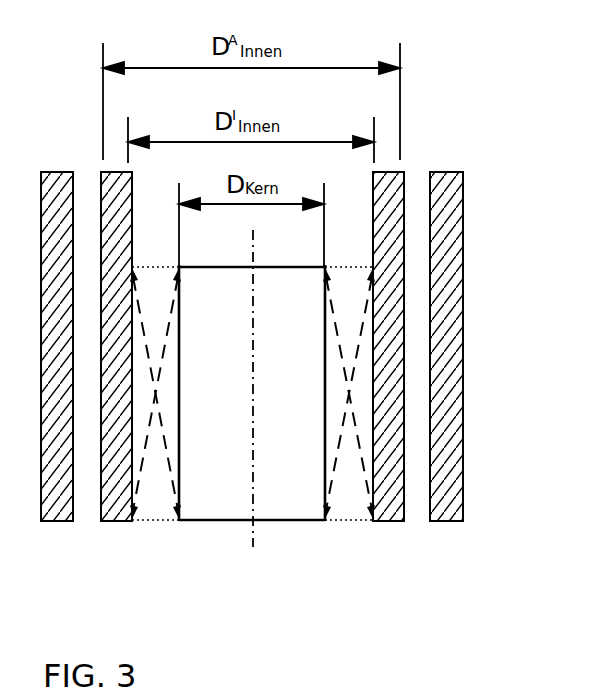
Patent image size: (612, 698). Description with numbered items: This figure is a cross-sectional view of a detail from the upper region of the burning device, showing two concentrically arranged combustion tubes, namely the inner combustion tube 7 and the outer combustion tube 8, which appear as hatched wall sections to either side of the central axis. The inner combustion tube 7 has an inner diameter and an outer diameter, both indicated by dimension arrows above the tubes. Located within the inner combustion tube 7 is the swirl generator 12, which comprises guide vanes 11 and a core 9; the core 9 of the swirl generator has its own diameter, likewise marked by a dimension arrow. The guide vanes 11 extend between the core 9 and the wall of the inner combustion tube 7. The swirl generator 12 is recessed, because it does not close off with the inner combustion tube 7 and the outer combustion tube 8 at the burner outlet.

The inner combustion tube 7 is at (388, 515).
The outer combustion tube 8 is at (443, 482).
The core 9 is at (285, 508).
The guide vanes 11 is at (153, 508).
The swirl generator 12 is at (325, 520).